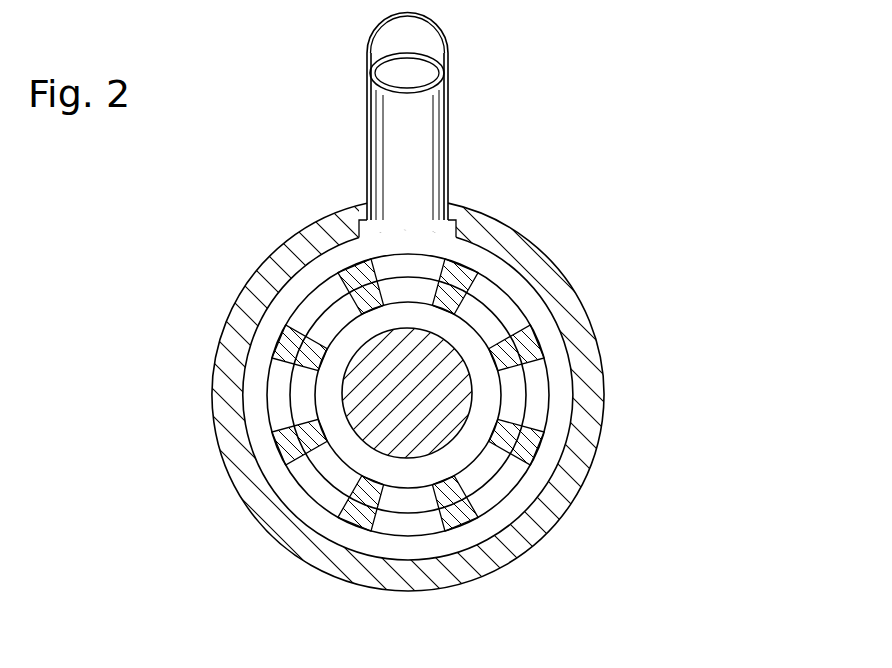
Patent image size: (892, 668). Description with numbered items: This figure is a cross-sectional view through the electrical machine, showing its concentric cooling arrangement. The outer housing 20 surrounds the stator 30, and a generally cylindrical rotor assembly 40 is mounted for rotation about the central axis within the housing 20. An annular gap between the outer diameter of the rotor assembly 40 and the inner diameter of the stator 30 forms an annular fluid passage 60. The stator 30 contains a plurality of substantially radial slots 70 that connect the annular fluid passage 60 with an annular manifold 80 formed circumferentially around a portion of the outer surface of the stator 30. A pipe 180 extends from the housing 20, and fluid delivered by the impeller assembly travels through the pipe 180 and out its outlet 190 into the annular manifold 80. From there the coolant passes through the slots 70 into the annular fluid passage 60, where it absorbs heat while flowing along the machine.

The housing 20 is at (595, 342).
The stator 30 is at (477, 337).
The rotor assembly 40 is at (430, 418).
The annular fluid passage 60 is at (330, 394).
The slots 70 is at (312, 305).
The annular manifold 80 is at (463, 250).
The pipe 180 is at (437, 24).
The outlet 190 is at (422, 108).